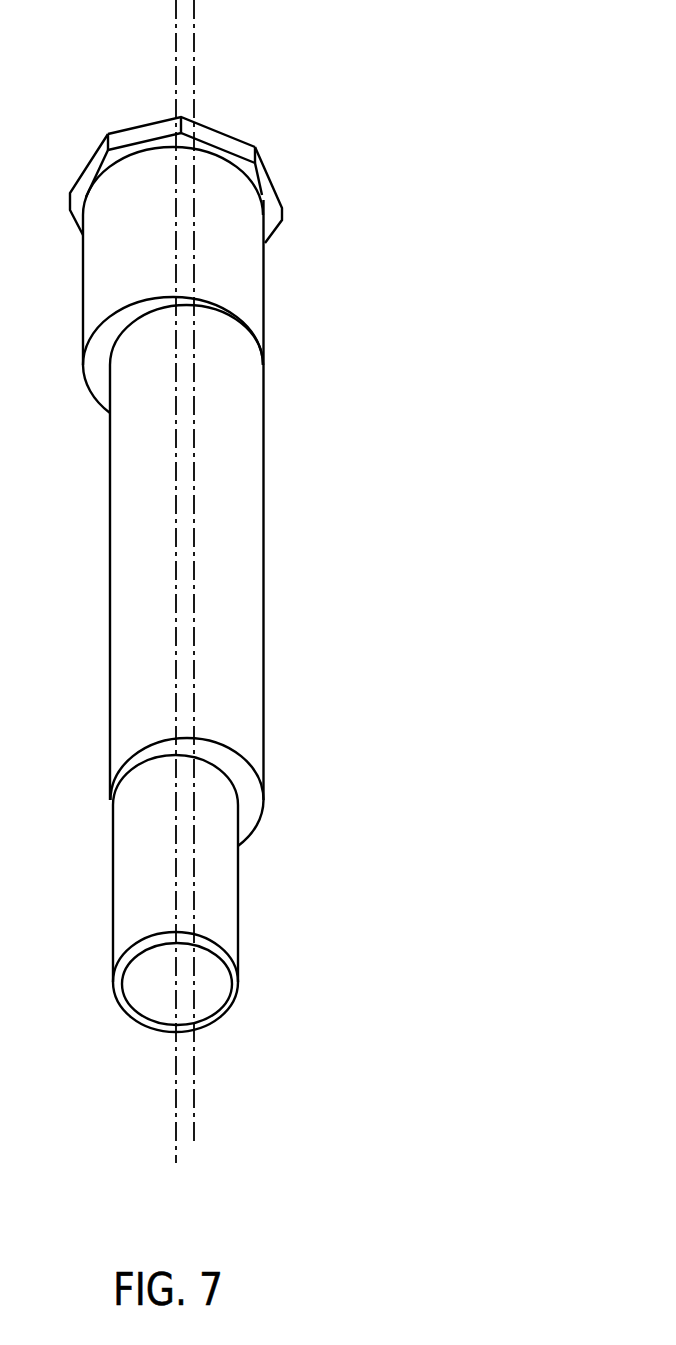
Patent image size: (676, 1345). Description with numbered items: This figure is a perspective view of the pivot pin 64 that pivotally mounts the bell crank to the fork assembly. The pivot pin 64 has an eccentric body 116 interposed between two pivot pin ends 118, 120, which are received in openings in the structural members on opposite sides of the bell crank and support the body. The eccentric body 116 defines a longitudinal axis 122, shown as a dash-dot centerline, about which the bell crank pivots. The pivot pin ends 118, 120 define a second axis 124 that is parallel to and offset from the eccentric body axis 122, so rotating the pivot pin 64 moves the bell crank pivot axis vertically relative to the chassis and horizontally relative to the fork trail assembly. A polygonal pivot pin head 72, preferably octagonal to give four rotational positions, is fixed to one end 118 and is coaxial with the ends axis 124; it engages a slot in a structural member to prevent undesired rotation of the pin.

The pivot pin 64 is at (408, 448).
The pivot pin head 72 is at (267, 173).
The eccentric body 116 is at (243, 512).
The pivot pin end 118 is at (243, 268).
The pivot pin end 120 is at (225, 892).
The longitudinal axis 122 is at (195, 87).
The axis 124 is at (175, 60).